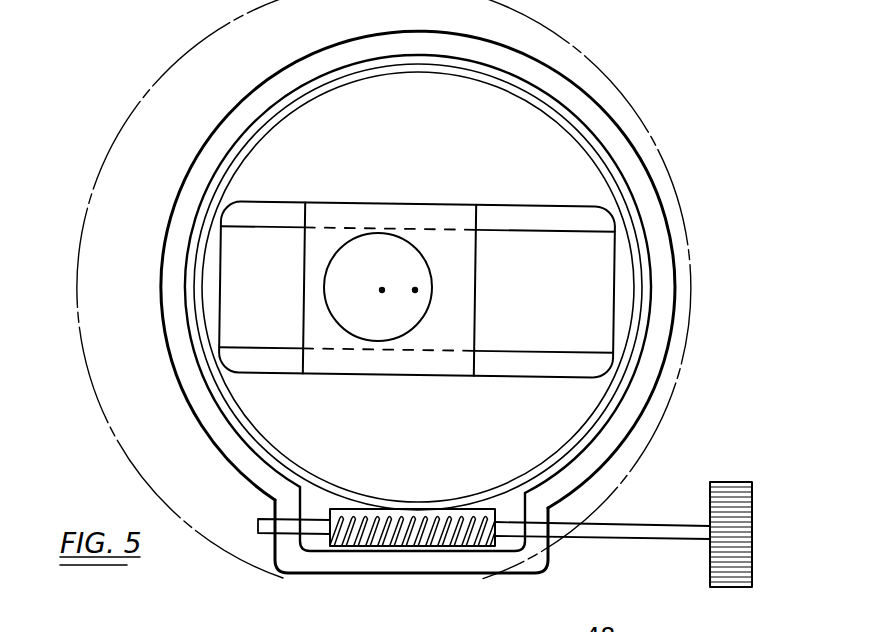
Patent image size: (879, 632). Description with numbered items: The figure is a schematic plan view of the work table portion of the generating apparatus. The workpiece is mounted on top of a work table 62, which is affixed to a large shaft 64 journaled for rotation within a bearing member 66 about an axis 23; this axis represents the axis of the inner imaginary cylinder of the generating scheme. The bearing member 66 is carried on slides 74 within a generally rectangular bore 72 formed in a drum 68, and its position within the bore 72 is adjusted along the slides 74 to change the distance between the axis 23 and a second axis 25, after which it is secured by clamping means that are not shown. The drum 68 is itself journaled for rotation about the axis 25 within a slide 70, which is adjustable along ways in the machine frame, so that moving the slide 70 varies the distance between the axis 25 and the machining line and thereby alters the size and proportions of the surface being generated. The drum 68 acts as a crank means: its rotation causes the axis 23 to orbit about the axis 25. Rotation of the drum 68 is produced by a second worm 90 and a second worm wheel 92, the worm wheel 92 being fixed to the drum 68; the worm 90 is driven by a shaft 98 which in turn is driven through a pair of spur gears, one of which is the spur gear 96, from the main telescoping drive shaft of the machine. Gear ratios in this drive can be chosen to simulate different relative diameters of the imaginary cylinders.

The axis 23 is at (382, 292).
The axis 25 is at (415, 289).
The work table 62 is at (200, 63).
The large shaft 64 is at (402, 335).
The bearing member 66 is at (463, 313).
The drum 68 is at (217, 403).
The slide 70 is at (173, 348).
The rectangular bore 72 is at (221, 261).
The slides 74 is at (520, 217).
The second worm 90 is at (427, 478).
The second worm wheel 92 is at (646, 315).
The spur gear 96 is at (780, 470).
The shaft 98 is at (677, 502).